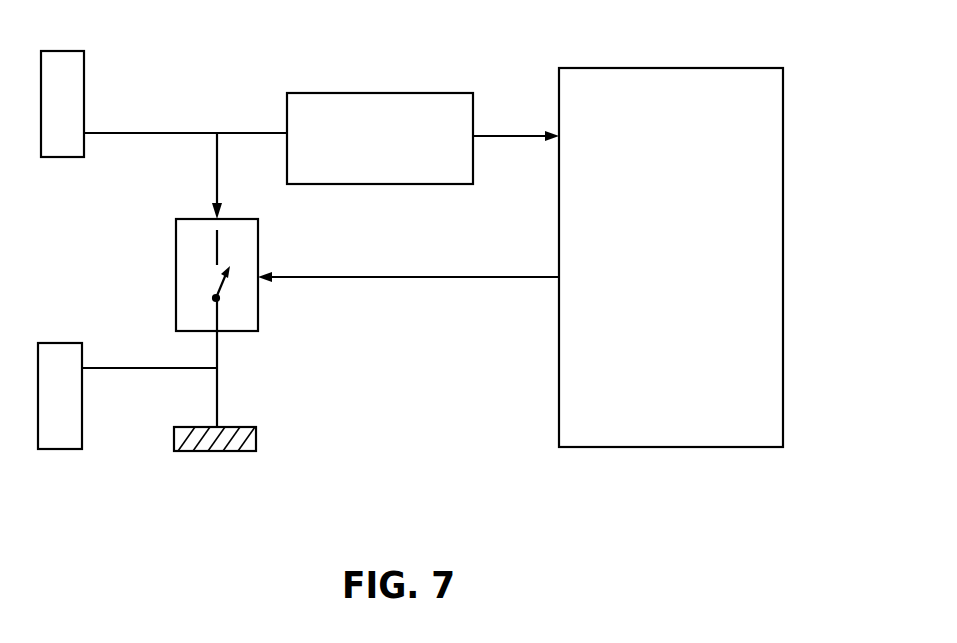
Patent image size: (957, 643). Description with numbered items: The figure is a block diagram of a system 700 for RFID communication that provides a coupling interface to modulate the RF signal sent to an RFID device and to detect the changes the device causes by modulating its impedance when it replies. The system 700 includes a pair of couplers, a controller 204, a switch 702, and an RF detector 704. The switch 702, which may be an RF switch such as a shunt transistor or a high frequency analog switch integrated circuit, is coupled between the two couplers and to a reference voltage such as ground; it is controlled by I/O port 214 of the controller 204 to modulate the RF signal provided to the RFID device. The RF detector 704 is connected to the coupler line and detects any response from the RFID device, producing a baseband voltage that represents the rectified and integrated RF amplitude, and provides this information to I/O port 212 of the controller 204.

The RF detector 704 is at (328, 92).
The switch 702 is at (176, 279).
The controller 204 is at (714, 68).
The I/O port 212 is at (558, 139).
The I/O port 214 is at (558, 276).
The system 700 is at (516, 472).